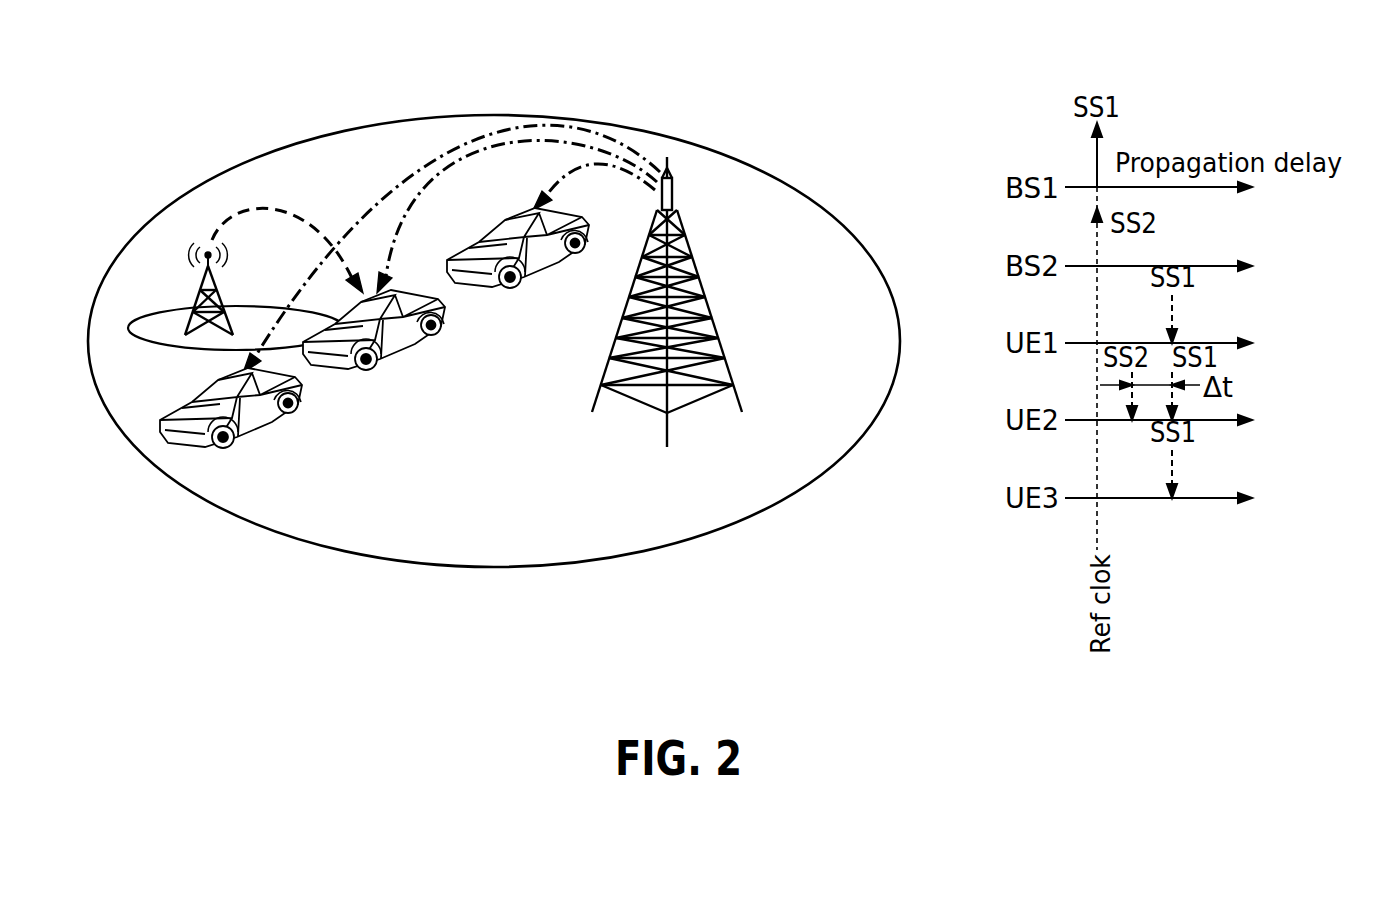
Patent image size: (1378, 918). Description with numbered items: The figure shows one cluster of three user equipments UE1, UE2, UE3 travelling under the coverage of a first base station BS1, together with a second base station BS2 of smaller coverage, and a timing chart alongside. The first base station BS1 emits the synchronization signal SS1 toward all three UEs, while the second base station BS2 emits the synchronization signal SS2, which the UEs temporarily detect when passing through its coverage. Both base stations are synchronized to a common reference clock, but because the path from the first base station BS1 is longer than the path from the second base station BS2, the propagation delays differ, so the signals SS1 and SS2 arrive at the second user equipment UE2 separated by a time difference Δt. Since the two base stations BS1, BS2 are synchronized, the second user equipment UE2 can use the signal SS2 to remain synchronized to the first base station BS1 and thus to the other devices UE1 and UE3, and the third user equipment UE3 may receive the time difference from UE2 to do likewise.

The first base station BS1 is at (680, 220).
The second base station BS2 is at (200, 291).
The first user equipment UE1 is at (280, 418).
The second user equipment UE2 is at (421, 335).
The third user equipment UE3 is at (565, 253).
The synchronization signal of BS1 SS1 is at (451, 247).
The synchronization signal of BS2 SS2 is at (287, 250).